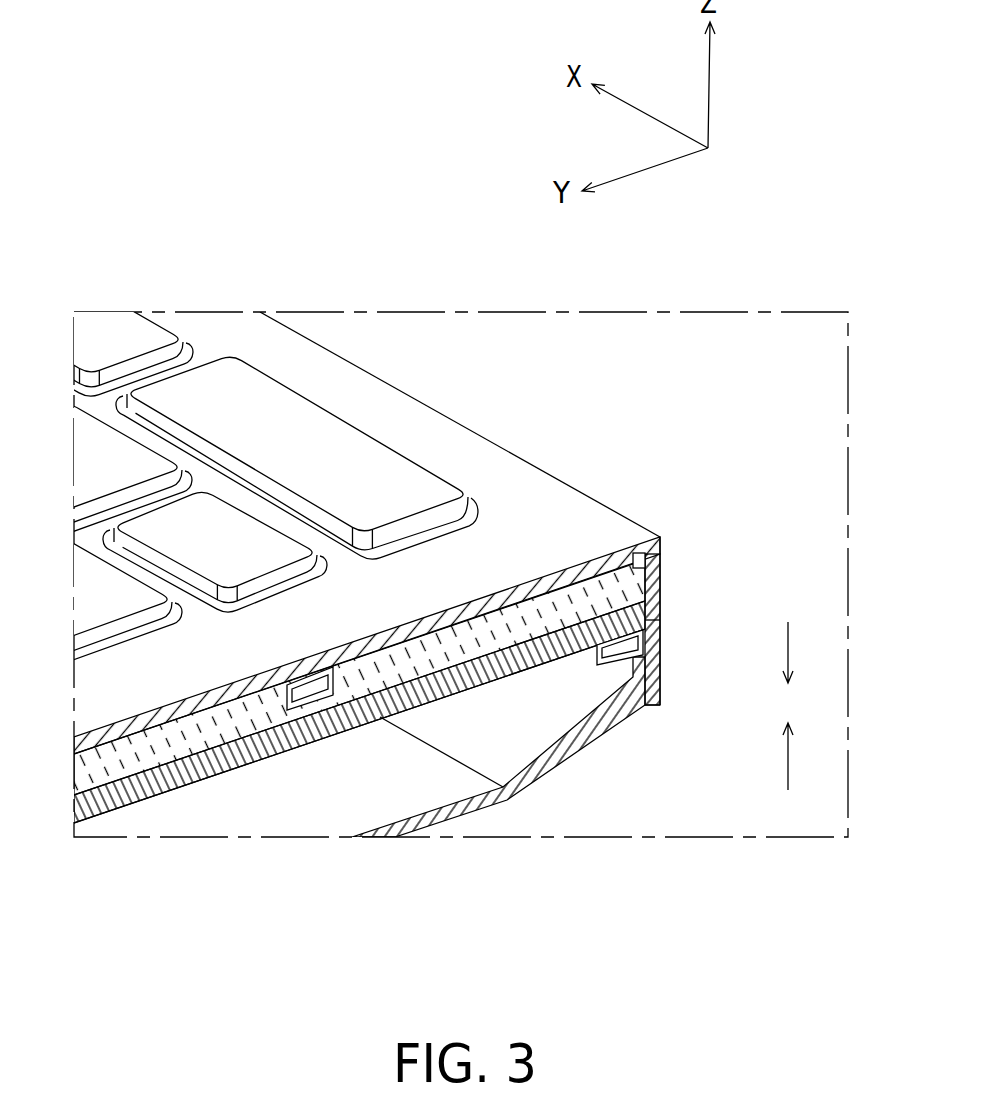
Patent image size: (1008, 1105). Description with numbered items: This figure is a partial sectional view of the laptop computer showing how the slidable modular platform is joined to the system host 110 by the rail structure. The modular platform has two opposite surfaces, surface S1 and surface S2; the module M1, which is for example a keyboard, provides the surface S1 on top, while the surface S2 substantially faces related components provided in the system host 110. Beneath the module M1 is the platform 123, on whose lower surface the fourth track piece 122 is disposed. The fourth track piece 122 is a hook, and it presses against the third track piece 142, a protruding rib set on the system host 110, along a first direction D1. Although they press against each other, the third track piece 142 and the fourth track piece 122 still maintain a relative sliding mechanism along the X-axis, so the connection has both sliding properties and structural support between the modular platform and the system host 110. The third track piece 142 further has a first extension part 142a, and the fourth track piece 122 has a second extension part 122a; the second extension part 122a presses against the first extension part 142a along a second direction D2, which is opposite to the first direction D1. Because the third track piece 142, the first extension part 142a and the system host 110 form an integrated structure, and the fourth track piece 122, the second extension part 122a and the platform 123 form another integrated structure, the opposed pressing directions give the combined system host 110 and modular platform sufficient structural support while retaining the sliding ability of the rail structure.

The module M1 is at (343, 455).
The surface S1 is at (532, 511).
The surface S2 is at (292, 765).
The system host 110 is at (503, 800).
The fourth track piece 122 is at (622, 665).
The second extension part 122a is at (660, 598).
The platform 123 is at (123, 792).
The third track piece 142 is at (597, 630).
The first extension part 142a is at (660, 623).
The first direction D1 is at (789, 774).
The second direction D2 is at (791, 634).